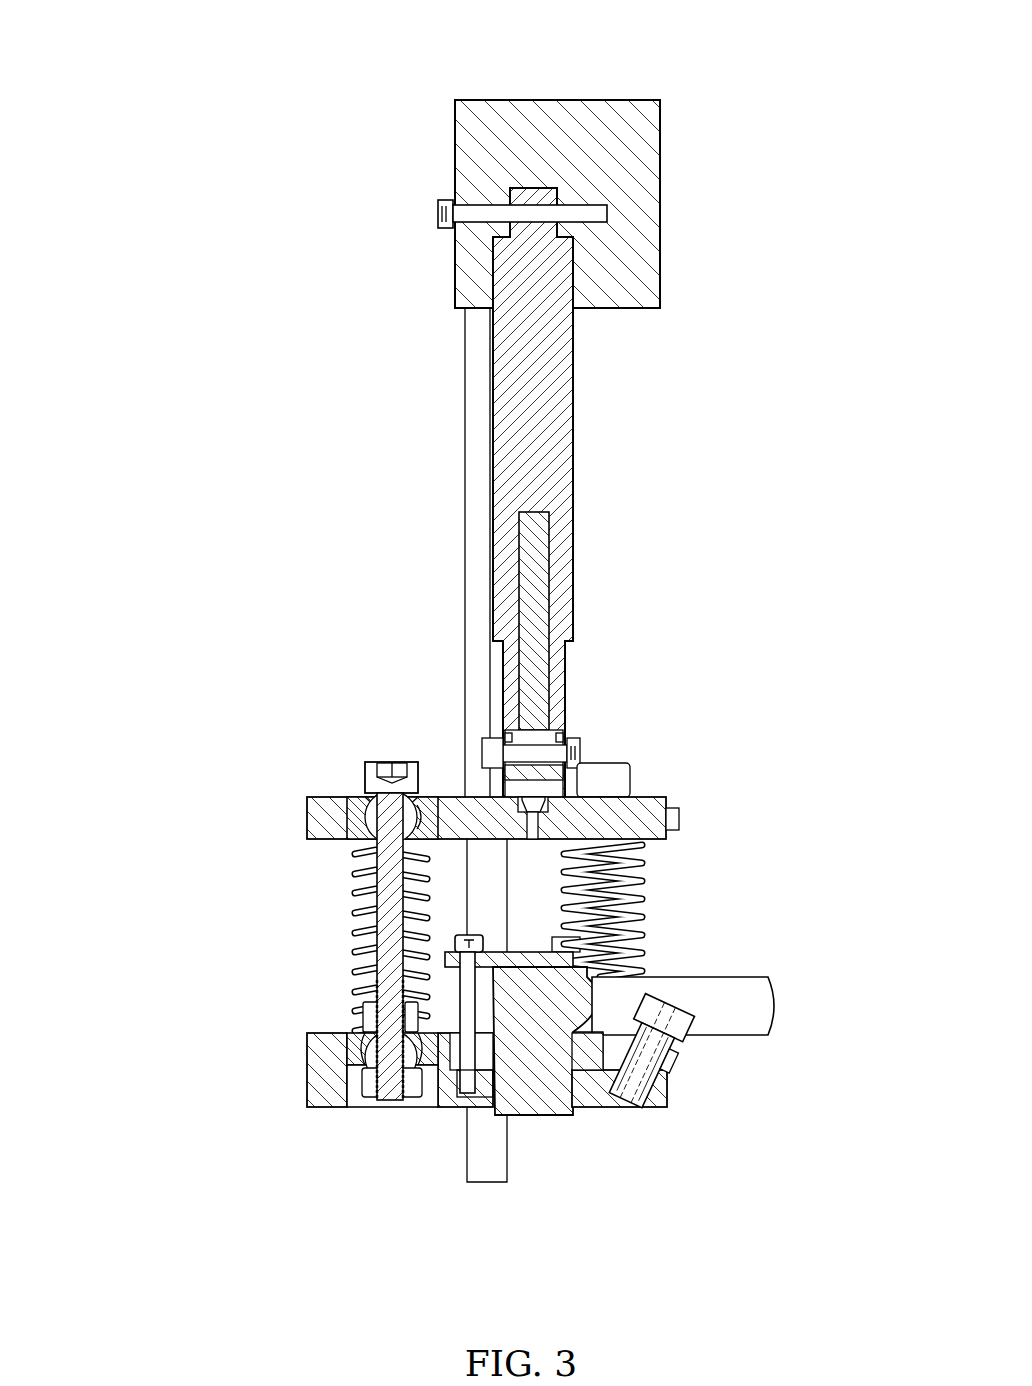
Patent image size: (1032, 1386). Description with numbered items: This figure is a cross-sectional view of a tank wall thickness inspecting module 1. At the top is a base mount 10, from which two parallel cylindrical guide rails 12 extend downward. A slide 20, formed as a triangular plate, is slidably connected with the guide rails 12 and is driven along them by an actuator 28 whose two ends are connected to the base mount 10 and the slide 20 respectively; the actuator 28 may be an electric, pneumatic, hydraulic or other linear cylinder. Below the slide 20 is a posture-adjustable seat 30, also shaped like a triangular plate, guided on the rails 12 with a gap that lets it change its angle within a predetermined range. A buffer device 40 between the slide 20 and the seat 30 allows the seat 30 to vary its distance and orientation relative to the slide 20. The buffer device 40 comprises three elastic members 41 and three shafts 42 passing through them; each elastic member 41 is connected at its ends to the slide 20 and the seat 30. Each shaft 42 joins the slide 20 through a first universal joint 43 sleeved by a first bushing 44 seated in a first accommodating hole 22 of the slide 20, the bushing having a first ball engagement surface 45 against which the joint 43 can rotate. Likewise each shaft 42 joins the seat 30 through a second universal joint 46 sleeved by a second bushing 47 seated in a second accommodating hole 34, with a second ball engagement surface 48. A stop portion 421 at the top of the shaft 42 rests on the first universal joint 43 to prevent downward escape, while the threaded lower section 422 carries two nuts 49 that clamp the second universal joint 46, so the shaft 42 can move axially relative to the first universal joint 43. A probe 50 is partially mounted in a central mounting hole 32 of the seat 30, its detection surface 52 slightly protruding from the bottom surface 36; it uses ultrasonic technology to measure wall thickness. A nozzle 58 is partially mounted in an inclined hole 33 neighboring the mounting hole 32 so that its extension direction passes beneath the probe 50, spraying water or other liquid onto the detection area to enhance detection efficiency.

The tank wall thickness inspecting module 1 is at (305, 150).
The base mount 10 is at (638, 148).
The guide rails 12 is at (479, 434).
The slide 20 is at (645, 813).
The first accommodating holes 22 is at (352, 820).
The actuator 28 is at (549, 398).
The posture-adjustable seat 30 is at (317, 1075).
The mounting hole 32 is at (597, 1107).
The inclined hole 33 is at (615, 1100).
The second accommodating holes 34 is at (343, 1088).
The bottom surface 36 is at (332, 1107).
The buffer device 40 is at (655, 893).
The elastic members 41 is at (350, 868).
The shafts 42 is at (388, 888).
The stop portion 421 is at (368, 795).
The lower section 422 is at (393, 1078).
The first universal joint 43 is at (363, 802).
The first bushing 44 is at (445, 797).
The first ball engagement surface 45 is at (432, 797).
The second universal joint 46 is at (363, 1030).
The second bushing 47 is at (355, 1053).
The second ball engagement surface 48 is at (427, 1067).
The nuts 49 is at (368, 1043).
The probe 50 is at (538, 1023).
The detection surface 52 is at (530, 1117).
The nozzle 58 is at (650, 1046).